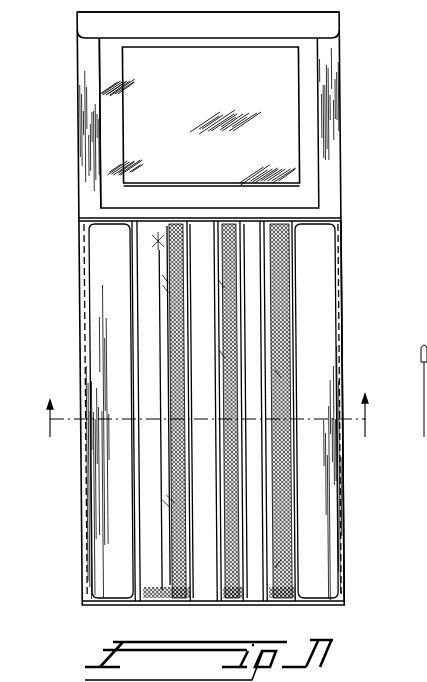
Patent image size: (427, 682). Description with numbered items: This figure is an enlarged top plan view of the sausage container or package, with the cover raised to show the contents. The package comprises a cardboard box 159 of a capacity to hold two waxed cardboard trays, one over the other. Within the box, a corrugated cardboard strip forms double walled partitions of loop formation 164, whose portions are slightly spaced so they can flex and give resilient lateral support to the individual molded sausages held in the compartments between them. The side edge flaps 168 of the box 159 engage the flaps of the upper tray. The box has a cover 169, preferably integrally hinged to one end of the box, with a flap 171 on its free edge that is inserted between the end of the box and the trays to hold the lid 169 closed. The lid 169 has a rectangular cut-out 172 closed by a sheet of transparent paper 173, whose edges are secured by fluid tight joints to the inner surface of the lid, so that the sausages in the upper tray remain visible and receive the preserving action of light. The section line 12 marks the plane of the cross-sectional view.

The section line 12- 12 is at (200, 432).
The cardboard box 159 is at (422, 392).
The double walled partitions of loop formation 164 is at (236, 340).
The side edge flaps 168 is at (112, 303).
The cover 169 is at (335, 153).
The flap 171 is at (318, 27).
The rectangular cut-out 172 is at (123, 144).
The sheet of transparent paper 173 is at (294, 112).